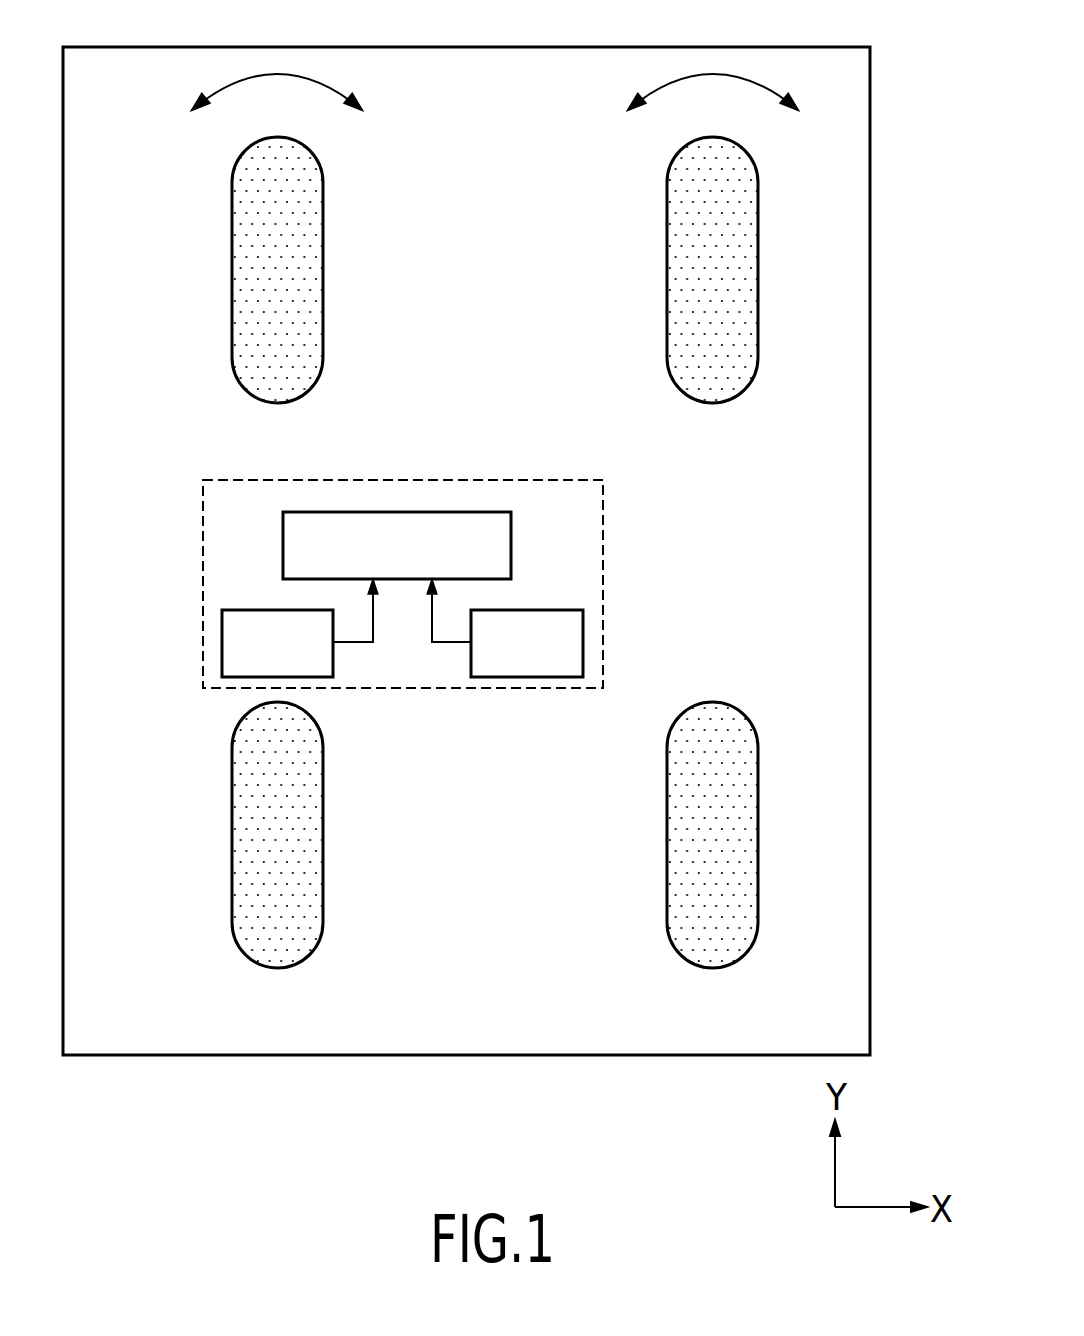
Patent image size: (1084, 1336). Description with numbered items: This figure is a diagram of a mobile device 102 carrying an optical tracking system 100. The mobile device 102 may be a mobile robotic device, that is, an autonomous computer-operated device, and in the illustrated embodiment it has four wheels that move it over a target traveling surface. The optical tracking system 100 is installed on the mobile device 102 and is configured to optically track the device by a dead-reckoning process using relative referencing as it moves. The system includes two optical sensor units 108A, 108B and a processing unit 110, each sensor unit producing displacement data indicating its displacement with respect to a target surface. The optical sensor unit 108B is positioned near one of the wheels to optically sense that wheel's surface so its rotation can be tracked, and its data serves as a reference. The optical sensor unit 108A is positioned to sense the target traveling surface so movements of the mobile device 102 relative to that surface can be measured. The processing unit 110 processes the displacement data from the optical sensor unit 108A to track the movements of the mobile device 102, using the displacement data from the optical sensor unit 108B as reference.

The optical tracking system 100 is at (403, 480).
The mobile device 102 is at (780, 47).
The optical sensor unit 108A is at (583, 640).
The optical sensor unit 108B is at (222, 640).
The processing unit 110 is at (511, 545).